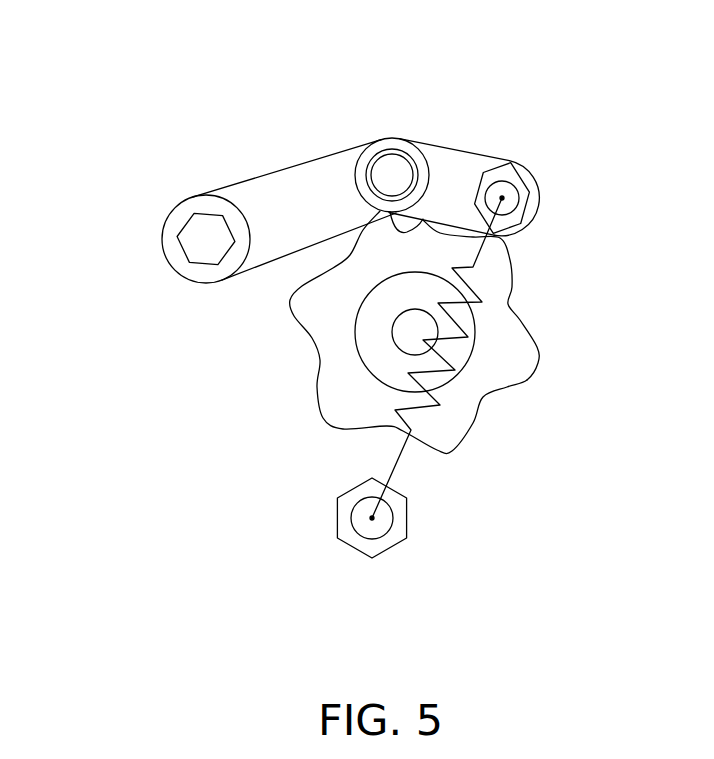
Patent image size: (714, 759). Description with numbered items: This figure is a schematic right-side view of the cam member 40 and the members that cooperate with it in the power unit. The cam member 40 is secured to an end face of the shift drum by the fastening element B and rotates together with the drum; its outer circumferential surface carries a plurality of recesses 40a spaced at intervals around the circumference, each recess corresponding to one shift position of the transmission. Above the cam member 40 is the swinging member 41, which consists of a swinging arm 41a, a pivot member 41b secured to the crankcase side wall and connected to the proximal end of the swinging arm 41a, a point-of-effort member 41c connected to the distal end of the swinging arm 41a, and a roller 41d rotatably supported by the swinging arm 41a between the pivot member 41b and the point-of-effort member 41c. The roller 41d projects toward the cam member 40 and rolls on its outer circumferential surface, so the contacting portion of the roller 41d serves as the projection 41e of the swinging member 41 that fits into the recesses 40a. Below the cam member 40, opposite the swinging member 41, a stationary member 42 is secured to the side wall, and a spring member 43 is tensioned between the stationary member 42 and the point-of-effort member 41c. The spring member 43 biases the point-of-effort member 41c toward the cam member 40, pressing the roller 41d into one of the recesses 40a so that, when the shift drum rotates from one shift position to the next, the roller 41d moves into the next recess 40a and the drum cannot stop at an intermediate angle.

The cam member 40 is at (444, 332).
The recesses 40a is at (508, 307).
The swinging member 41 is at (317, 155).
The swinging arm 41a is at (327, 153).
The pivot member 41b is at (195, 243).
The point-of-effort member 41c is at (522, 189).
The roller 41d is at (390, 134).
The projection 41e is at (413, 228).
The stationary member 42 is at (383, 527).
The spring member 43 is at (422, 412).
The fastening element B is at (407, 327).